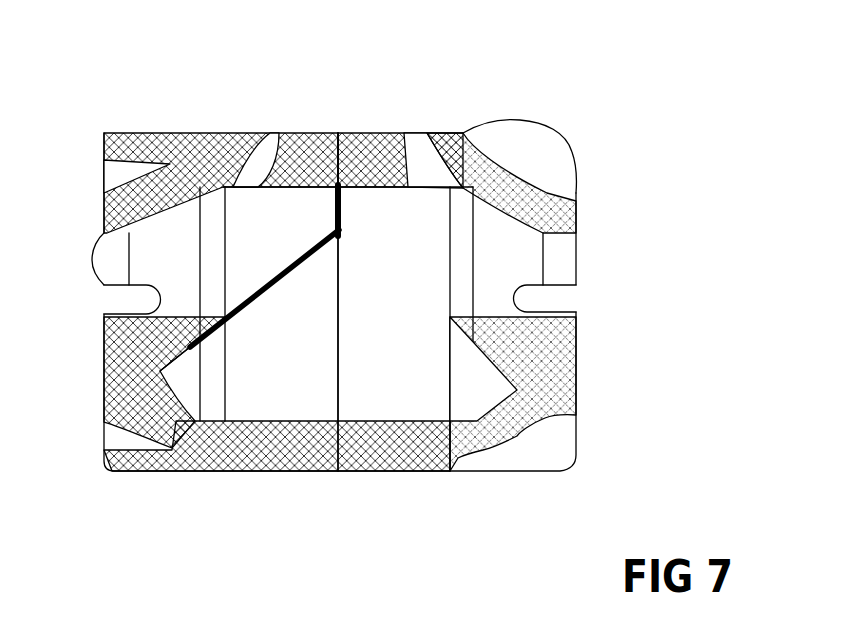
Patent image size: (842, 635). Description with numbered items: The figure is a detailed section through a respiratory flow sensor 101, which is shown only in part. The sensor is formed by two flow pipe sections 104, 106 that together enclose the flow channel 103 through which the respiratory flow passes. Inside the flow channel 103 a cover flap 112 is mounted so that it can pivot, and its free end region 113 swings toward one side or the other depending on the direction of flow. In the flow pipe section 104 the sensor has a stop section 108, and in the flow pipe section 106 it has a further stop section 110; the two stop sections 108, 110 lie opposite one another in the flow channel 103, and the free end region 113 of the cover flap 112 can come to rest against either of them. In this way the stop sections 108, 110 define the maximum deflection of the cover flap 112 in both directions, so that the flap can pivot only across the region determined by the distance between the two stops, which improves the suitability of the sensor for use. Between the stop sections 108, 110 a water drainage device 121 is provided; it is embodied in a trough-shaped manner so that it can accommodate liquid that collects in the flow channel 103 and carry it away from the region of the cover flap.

The respiratory flow sensor 101 is at (690, 76).
The flow channel 103 is at (394, 302).
The flow pipe section 104 is at (176, 131).
The flow pipe section 106 is at (497, 70).
The stop section 108 is at (187, 513).
The stop section 110 is at (452, 502).
The cover flap 112 is at (295, 263).
The free end region 113 is at (277, 523).
The water drainage device 121 is at (370, 533).